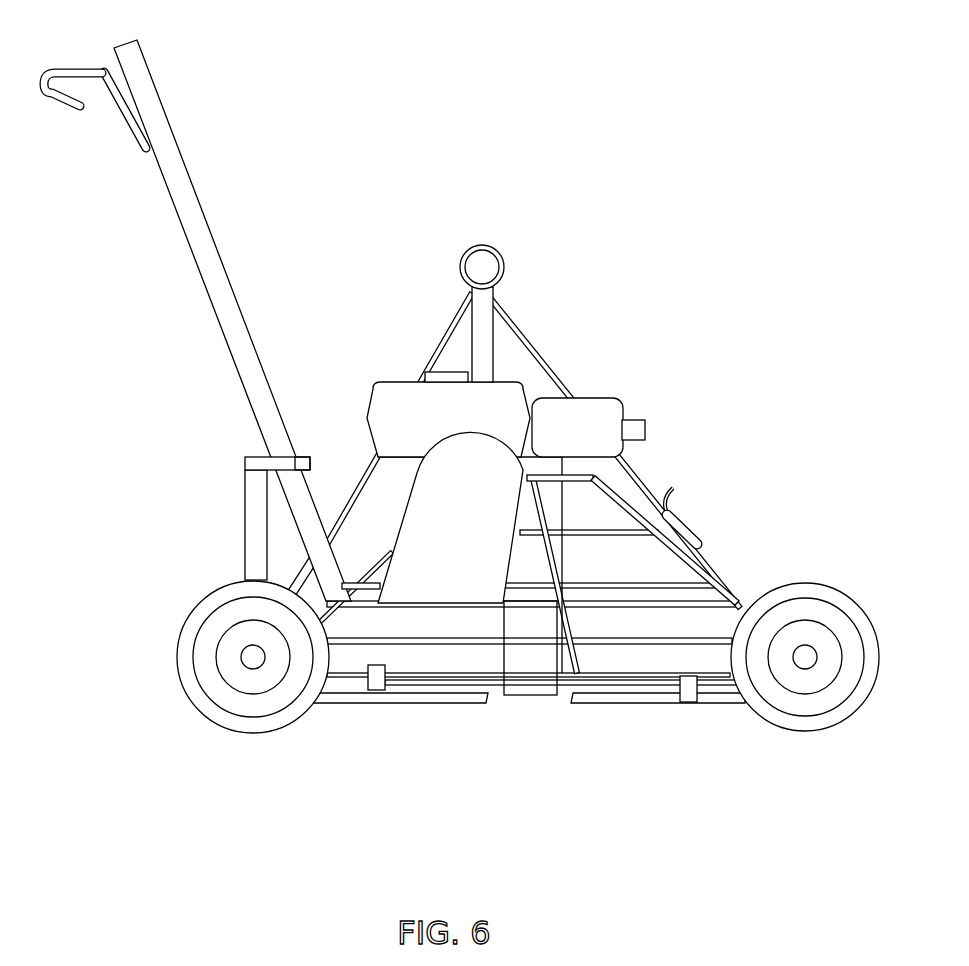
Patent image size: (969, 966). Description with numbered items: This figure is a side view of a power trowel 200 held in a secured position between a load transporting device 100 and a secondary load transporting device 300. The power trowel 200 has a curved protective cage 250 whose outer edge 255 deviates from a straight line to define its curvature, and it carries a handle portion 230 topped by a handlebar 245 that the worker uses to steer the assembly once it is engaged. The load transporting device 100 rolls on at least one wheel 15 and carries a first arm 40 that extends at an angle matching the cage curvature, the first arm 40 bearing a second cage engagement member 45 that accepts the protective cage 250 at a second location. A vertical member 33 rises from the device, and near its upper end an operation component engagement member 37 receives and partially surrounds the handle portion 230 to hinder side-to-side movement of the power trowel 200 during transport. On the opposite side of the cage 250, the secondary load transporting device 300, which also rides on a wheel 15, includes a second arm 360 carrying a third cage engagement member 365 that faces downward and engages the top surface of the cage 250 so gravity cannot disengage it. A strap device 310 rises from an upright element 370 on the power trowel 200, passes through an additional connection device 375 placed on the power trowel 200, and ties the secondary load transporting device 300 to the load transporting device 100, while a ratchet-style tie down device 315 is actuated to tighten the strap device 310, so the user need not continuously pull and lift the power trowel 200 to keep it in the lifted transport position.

The wheel 15 is at (202, 610).
The vertical member 33 is at (252, 512).
The operation component engagement member 37 is at (307, 467).
The first arm 40 is at (337, 683).
The second cage engagement member 45 is at (378, 685).
The load transporting device 100 is at (245, 466).
The power trowel 200 is at (633, 492).
The handle portion 230 is at (198, 214).
The handlebar 245 is at (76, 68).
The protective cage 250 is at (530, 680).
The outer edge 255 is at (452, 680).
The secondary load transporting device 300 is at (726, 686).
The strap device 310 is at (532, 347).
The ratchet-style tie down device 315 is at (693, 533).
The second arm 360 is at (709, 688).
The third cage engagement member 365 is at (686, 692).
The lifting mast 370 is at (479, 327).
The additional connection device 375 is at (484, 245).